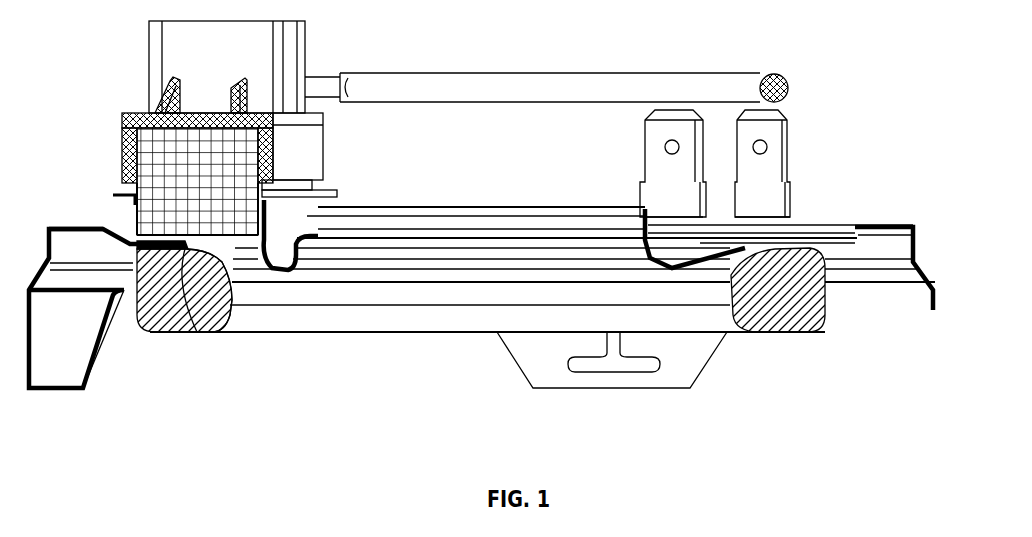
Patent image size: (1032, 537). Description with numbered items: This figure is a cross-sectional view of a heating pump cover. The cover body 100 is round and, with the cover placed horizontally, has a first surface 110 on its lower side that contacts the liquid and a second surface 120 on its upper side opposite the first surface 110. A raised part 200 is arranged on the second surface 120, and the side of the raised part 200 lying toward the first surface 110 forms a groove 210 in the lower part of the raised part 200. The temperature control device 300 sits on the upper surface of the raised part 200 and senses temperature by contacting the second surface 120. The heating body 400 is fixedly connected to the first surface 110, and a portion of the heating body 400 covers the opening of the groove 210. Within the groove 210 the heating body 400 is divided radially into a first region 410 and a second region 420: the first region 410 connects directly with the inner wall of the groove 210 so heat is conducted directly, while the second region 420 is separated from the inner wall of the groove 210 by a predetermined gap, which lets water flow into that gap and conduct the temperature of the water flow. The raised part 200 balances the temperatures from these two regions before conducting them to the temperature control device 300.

The cover body 100 is at (447, 205).
The first surface 110 is at (65, 238).
The second surface 120 is at (63, 224).
The raised part 200 is at (263, 247).
The groove 210 is at (268, 265).
The temperature control device 300 is at (222, 115).
The heating body 400 is at (185, 320).
The first region 410 is at (137, 318).
The second region 420 is at (226, 300).